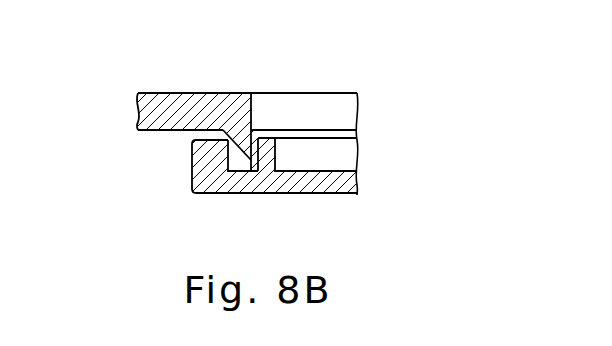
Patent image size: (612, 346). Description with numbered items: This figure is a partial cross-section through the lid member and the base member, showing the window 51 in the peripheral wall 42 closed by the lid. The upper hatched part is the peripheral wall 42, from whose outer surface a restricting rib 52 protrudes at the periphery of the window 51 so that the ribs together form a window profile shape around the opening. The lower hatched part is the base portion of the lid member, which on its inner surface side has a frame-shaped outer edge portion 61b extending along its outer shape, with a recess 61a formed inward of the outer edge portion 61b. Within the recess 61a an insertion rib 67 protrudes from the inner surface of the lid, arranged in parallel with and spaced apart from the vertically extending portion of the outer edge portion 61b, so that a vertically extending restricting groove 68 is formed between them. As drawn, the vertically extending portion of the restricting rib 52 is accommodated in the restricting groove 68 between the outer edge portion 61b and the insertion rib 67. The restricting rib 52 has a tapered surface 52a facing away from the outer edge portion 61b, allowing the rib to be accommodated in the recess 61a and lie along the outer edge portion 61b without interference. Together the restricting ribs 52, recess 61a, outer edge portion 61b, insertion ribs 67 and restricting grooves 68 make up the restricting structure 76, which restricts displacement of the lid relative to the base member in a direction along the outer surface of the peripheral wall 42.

The peripheral wall 42 is at (185, 112).
The restricting structure 76 is at (207, 89).
The window 51 is at (253, 108).
The restricting ribs 52 is at (267, 130).
The tapered surfaces 52a is at (228, 152).
The recess 61a is at (347, 156).
The outer edge portion 61b is at (195, 137).
The insertion ribs 67 is at (277, 157).
The restricting groove 68 is at (236, 162).